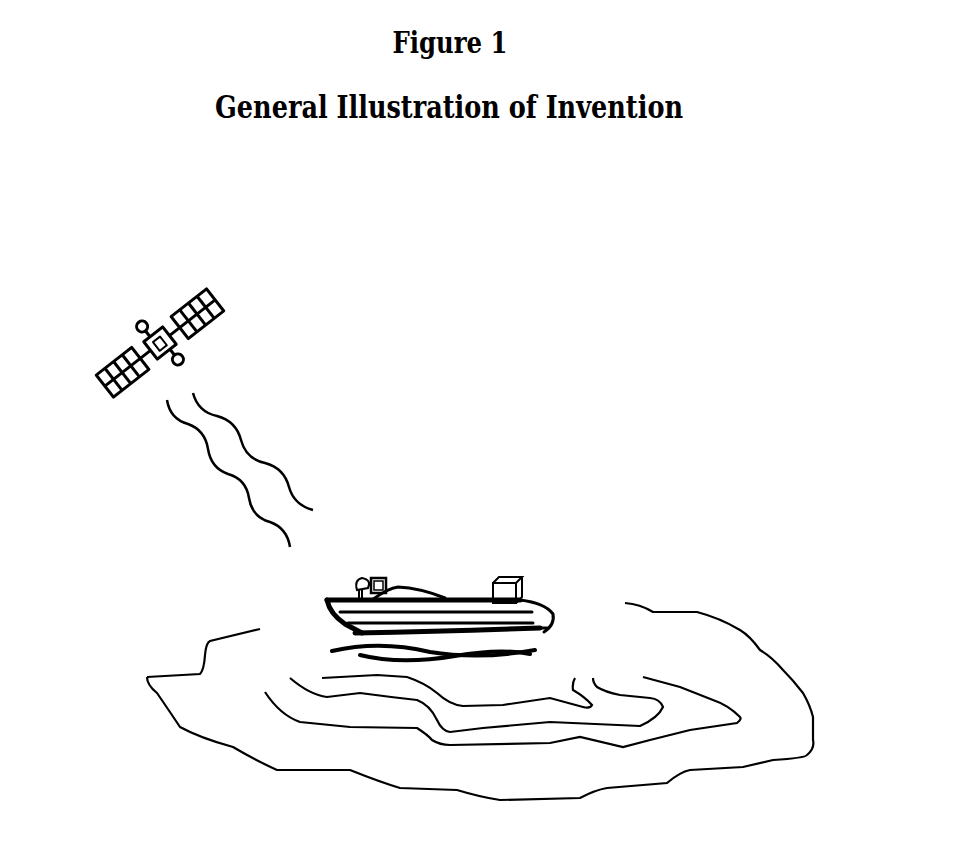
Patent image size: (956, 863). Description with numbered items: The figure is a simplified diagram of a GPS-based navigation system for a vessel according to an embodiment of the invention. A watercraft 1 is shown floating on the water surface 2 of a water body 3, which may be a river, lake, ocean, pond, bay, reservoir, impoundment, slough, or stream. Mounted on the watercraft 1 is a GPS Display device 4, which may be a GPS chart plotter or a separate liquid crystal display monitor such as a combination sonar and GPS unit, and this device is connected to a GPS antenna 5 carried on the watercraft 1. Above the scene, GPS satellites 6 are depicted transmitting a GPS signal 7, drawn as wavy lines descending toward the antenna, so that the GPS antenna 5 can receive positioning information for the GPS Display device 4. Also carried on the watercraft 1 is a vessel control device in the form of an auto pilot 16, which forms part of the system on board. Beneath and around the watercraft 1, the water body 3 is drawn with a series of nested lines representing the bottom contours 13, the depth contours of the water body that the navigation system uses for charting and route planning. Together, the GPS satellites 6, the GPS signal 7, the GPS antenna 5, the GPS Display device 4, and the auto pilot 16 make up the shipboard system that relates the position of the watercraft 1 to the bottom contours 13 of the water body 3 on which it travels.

The watercraft 1 is at (465, 590).
The water surface 2 is at (555, 633).
The water body 3 is at (140, 676).
The GPS Display device 4 is at (382, 575).
The GPS antenna 5 is at (362, 578).
The GPS satellites 6 is at (213, 292).
The GPS signal 7 is at (230, 425).
The bottom contours 13 is at (316, 676).
The vessel control device—auto pilot 16 is at (524, 577).